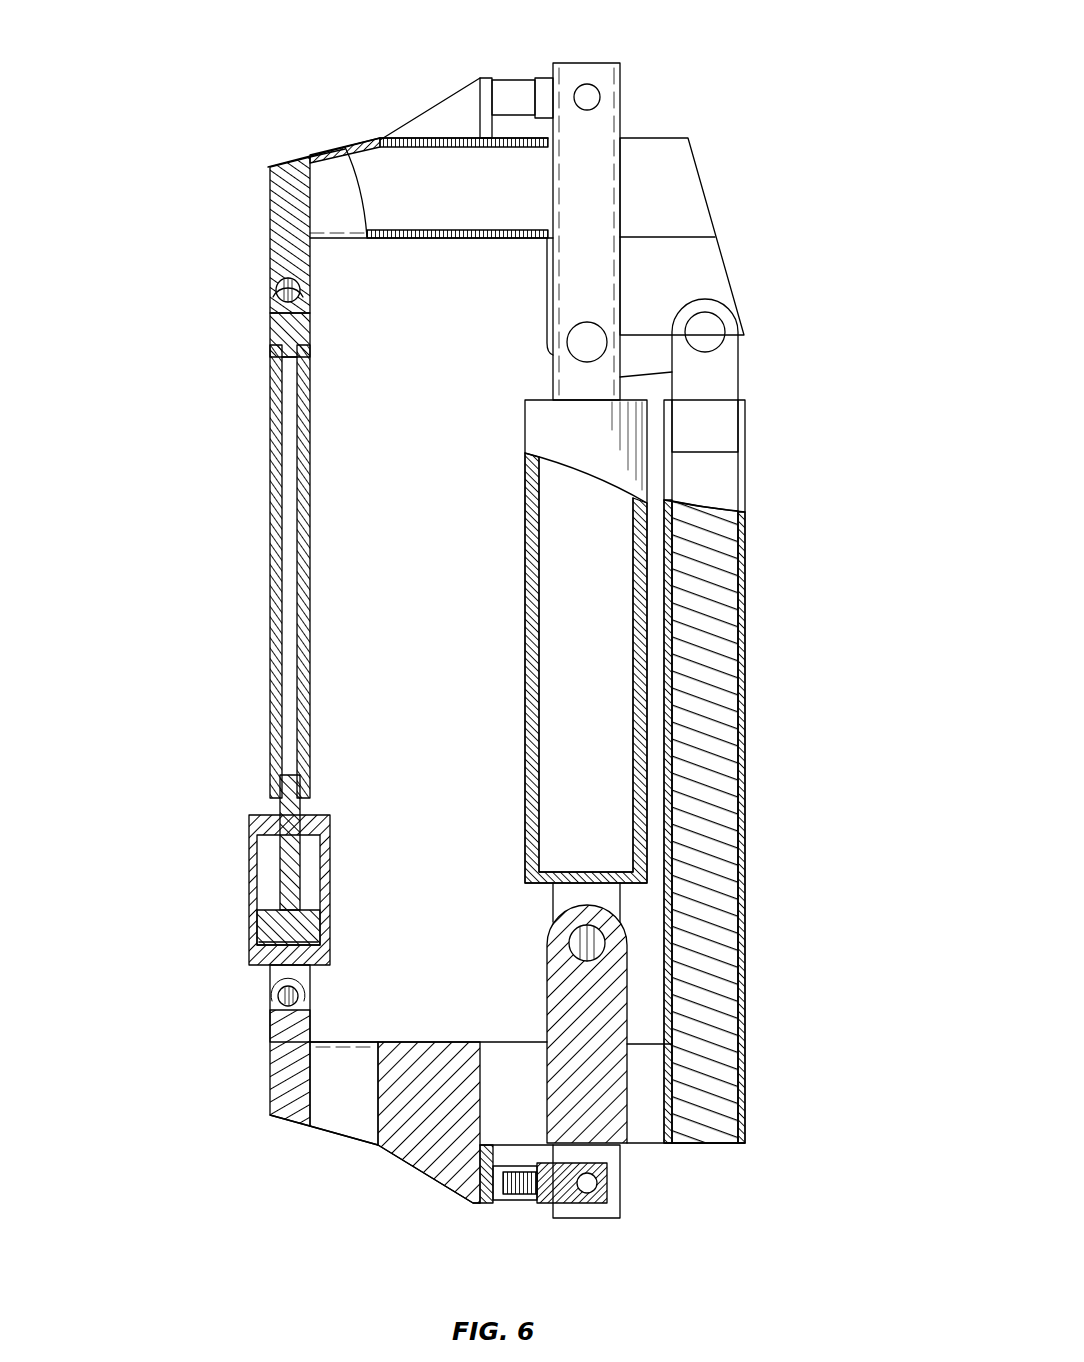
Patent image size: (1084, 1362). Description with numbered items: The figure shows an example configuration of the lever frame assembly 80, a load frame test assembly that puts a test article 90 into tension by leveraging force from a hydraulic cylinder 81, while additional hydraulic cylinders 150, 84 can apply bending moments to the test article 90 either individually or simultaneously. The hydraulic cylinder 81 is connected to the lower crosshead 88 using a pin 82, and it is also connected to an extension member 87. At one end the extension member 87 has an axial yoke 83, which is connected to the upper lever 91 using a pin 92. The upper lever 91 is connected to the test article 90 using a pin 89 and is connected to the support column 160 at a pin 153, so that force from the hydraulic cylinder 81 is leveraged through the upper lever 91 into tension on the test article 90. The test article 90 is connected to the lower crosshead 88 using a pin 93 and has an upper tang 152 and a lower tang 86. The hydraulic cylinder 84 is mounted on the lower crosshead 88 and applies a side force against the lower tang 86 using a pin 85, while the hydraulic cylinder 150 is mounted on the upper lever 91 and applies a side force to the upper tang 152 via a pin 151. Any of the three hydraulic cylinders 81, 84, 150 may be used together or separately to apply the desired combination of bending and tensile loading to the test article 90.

The lever frame assembly 80 is at (288, 52).
The hydraulic cylinder 81 is at (252, 890).
The pin 82 is at (284, 1001).
The axial yoke 83 is at (280, 322).
The hydraulic cylinder 84 is at (506, 1188).
The pin 85 is at (600, 1186).
The lower tang 86 is at (588, 1210).
The extension member 87 is at (276, 565).
The lower crosshead 88 is at (770, 1178).
The pin 89 is at (582, 344).
The test article 90 is at (640, 697).
The upper lever 91 is at (410, 225).
The pin 92 is at (300, 294).
The pin 93 is at (592, 944).
The hydraulic cylinder 150 is at (445, 110).
The pin 151 is at (584, 86).
The upper tang 152 is at (622, 95).
The pin 153 is at (708, 334).
The support column 160 is at (720, 614).